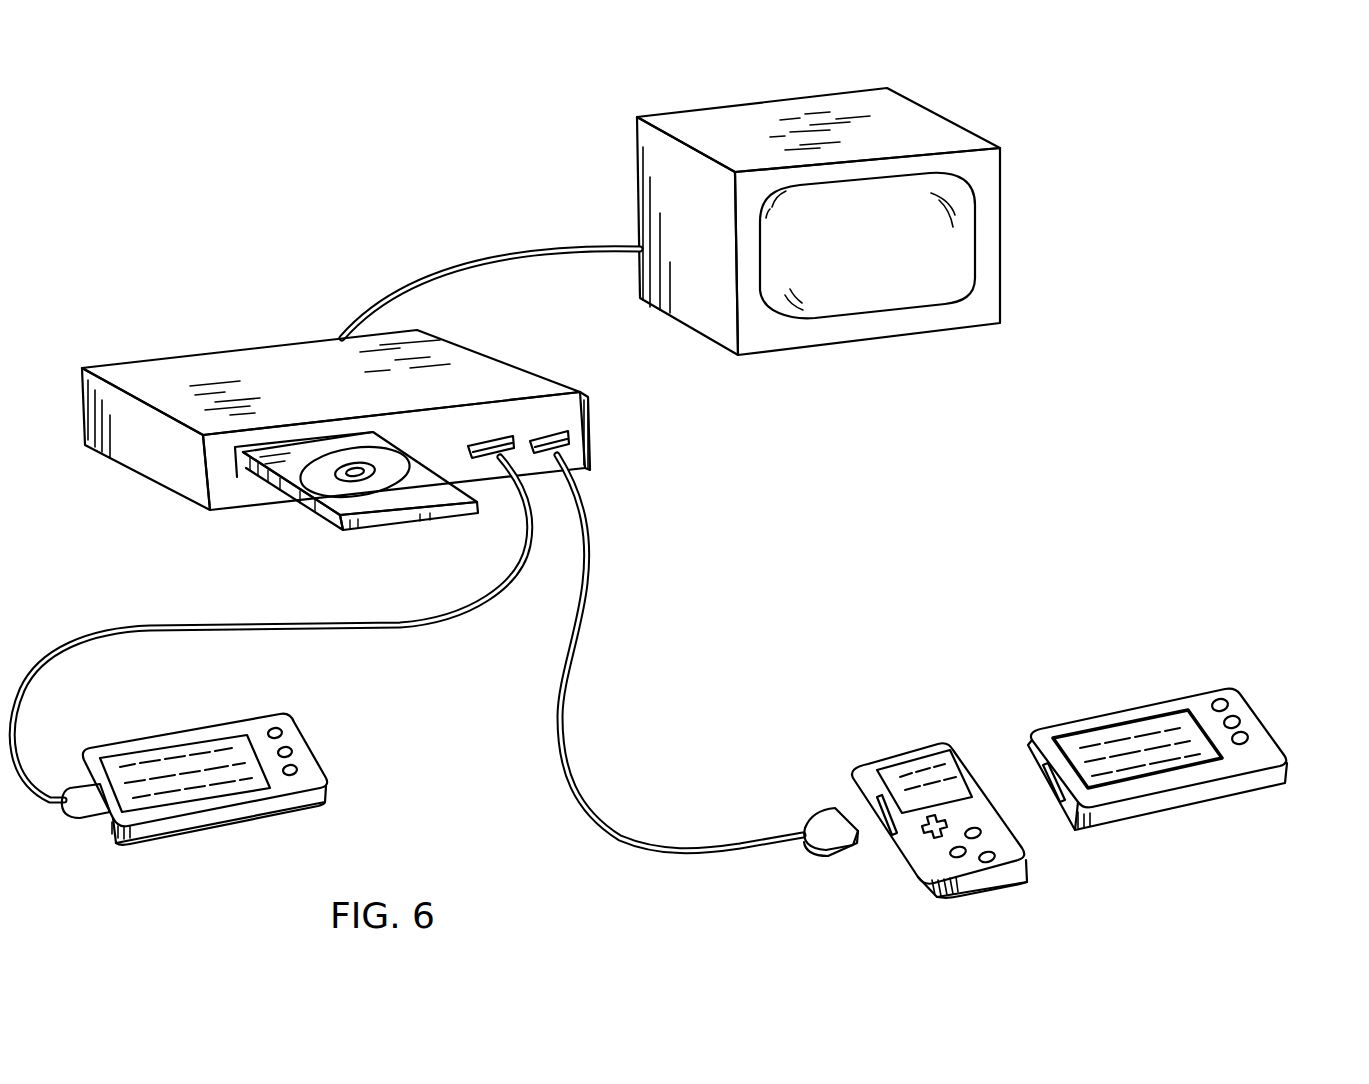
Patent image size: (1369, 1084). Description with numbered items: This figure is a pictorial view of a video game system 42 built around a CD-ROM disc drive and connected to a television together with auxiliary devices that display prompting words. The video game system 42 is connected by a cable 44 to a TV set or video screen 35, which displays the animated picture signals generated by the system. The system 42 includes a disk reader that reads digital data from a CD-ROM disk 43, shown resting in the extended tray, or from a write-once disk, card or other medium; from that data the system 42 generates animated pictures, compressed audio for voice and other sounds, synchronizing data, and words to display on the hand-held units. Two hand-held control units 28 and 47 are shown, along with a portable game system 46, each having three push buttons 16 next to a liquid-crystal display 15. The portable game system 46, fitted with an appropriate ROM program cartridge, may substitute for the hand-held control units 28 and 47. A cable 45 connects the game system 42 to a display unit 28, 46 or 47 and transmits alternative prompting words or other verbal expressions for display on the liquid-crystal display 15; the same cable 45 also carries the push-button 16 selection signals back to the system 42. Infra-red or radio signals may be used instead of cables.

The liquid-crystal display 15 is at (213, 792).
The push buttons 16 is at (292, 752).
The hand-held control unit 28 is at (212, 727).
The TV set or video screen 35 is at (948, 253).
The video game system 42 is at (510, 373).
The CD-ROM disk 43 is at (325, 483).
The cable 44 is at (467, 263).
The cable 45 is at (573, 783).
The portable game system 46 is at (993, 887).
The hand-held control unit 47 is at (1213, 788).